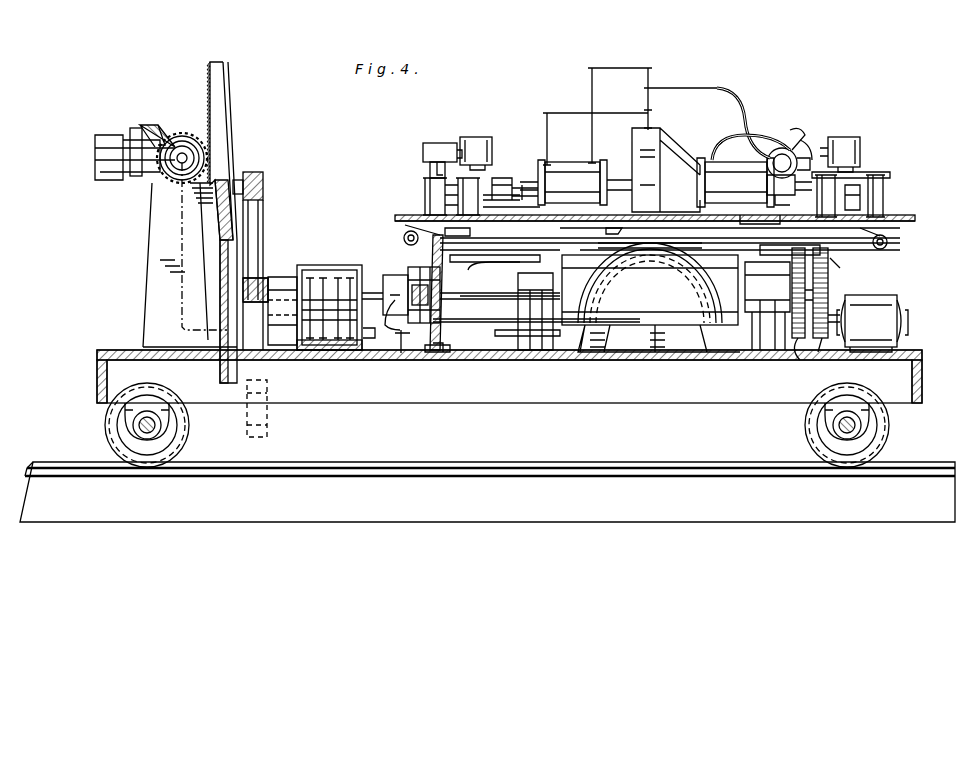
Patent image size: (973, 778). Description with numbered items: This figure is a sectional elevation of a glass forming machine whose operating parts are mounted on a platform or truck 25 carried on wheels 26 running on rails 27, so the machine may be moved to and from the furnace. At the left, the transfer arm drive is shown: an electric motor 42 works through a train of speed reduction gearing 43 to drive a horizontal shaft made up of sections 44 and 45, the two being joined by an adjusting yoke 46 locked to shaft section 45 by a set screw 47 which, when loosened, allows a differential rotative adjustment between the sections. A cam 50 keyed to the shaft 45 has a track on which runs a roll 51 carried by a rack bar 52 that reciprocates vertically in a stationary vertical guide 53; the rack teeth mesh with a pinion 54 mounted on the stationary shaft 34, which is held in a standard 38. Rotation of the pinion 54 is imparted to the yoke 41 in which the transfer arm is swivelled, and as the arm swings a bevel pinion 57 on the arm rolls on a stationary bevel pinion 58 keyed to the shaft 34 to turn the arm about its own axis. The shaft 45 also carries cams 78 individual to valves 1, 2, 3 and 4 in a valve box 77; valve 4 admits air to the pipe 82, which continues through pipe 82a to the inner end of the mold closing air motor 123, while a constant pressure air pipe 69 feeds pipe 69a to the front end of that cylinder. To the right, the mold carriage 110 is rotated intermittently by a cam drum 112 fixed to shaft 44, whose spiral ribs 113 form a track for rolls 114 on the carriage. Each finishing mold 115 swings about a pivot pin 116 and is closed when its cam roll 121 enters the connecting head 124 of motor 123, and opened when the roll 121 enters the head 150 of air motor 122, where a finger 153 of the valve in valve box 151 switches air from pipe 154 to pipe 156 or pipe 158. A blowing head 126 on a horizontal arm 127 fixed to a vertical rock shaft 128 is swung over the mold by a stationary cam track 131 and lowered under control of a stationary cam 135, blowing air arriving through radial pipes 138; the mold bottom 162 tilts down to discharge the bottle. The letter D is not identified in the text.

The valve 1 is at (310, 340).
The valve 2 is at (323, 340).
The valve 3 is at (338, 340).
The valve 4 is at (351, 340).
The platform or truck 25 is at (466, 402).
The wheels 26 is at (189, 428).
The rails 27 is at (300, 462).
The shaft 34 is at (178, 168).
The standard 38 is at (155, 260).
The yoke 41 is at (128, 135).
The electric motor 42 is at (880, 295).
The train of speed reduction gearing 43 is at (816, 314).
The shaft section 44 is at (484, 298).
The shaft section 45 is at (374, 290).
The yoke 46 is at (398, 272).
The set screw 47 is at (396, 320).
The cam 50 is at (258, 215).
The roll 51 is at (258, 184).
The rack bar 52 is at (215, 130).
The stationary vertical guide 53 is at (222, 290).
The pinion 54 is at (196, 118).
The bevel pinion 57 is at (158, 122).
The stationary bevel pinion 58 is at (165, 120).
The constant pressure air pipe 69 is at (400, 340).
The pipe 69a is at (570, 110).
The valve box 77 is at (306, 266).
The cams 78 is at (320, 300).
The pipe 82 is at (466, 320).
The pipe 82a is at (640, 66).
The mold carriage 110 is at (890, 221).
The cam drum 112 is at (640, 350).
The ribs 113 is at (720, 285).
The rolls 114 is at (516, 252).
The finishing mold 115 is at (424, 186).
The pivot pin 116 is at (447, 200).
The cam roll 121 is at (532, 178).
The air motor 122 is at (712, 145).
The air motor 123 is at (562, 170).
The connecting head 124 is at (500, 178).
The blowing head 126 is at (482, 140).
The horizontal arm 127 is at (458, 132).
The vertical rock shaft 128 is at (428, 168).
The stationary cam track 131 is at (440, 258).
The stationary cam 135 is at (470, 268).
The radial pipes 138 is at (742, 222).
The head 150 is at (860, 170).
The valve box 151 is at (800, 140).
The finger 153 is at (787, 162).
The pipe 154 is at (746, 110).
The pipe 156 is at (792, 126).
The pipe 158 is at (730, 135).
The mold bottom 162 is at (903, 244).
The control device D is at (406, 161).